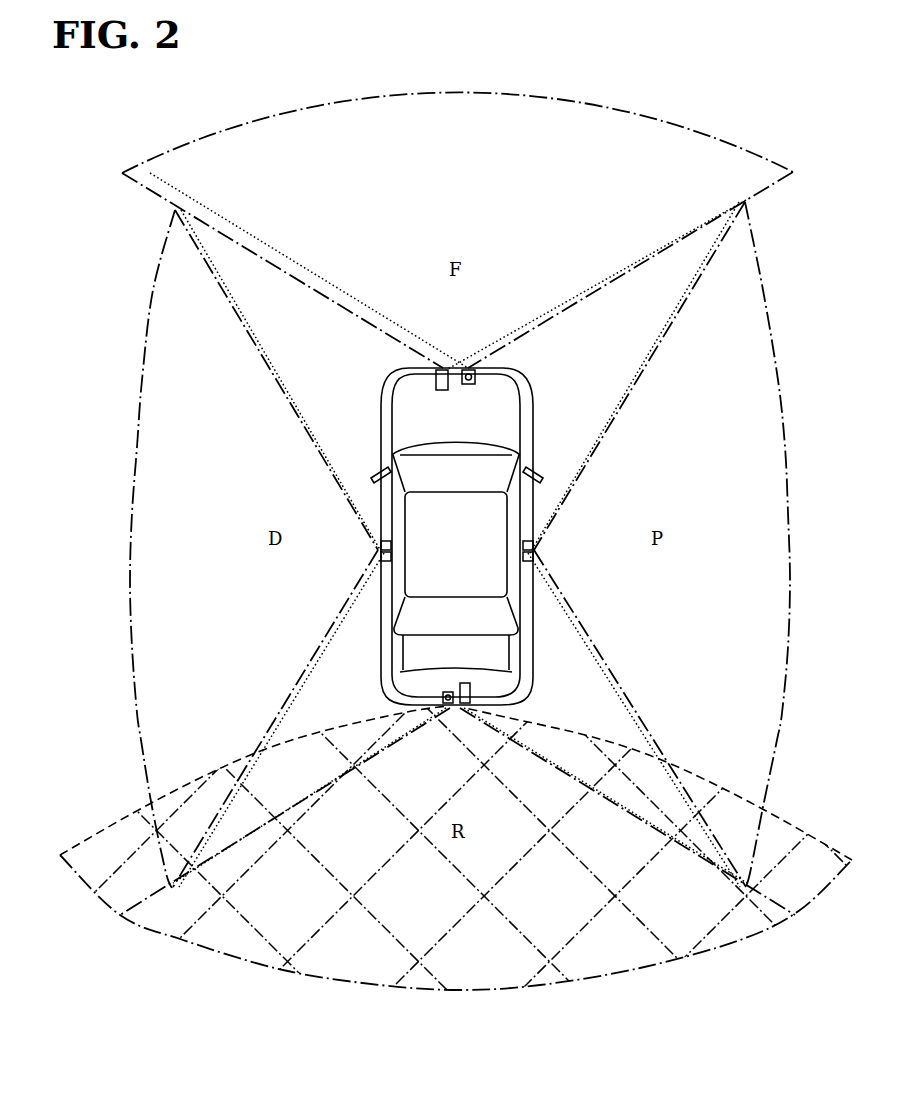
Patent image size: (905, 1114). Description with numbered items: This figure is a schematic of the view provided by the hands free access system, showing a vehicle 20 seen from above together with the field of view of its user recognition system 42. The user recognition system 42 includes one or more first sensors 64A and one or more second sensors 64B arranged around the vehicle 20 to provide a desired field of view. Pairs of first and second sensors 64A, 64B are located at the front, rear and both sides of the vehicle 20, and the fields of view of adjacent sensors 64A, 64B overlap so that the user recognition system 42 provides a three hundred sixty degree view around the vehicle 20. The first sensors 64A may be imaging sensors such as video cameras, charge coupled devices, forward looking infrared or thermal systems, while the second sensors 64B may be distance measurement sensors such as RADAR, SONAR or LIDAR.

The vehicle 20 is at (468, 561).
The user recognition system 42 is at (766, 279).
The first sensor 64A is at (442, 368).
The second sensor 64B is at (467, 368).